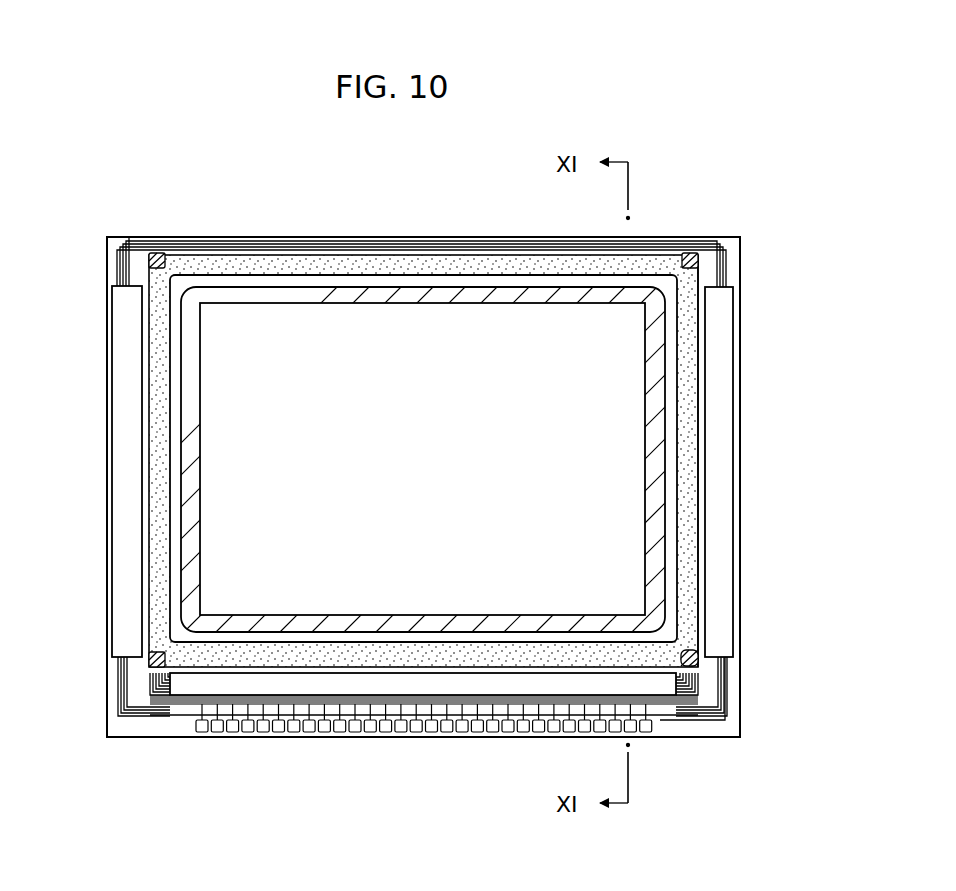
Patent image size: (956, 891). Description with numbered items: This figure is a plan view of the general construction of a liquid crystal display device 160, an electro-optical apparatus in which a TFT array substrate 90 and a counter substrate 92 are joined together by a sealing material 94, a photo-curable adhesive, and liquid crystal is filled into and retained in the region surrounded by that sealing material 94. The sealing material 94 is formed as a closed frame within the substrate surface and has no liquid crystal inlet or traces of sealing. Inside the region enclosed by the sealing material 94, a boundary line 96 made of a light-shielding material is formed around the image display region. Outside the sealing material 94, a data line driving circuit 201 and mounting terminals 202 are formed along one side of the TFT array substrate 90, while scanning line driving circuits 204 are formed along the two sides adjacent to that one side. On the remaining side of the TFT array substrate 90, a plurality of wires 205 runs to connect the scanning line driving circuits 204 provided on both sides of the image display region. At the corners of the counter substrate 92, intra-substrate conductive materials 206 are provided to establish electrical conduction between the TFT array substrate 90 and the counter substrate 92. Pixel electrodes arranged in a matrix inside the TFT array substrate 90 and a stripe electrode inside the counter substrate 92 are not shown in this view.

The liquid crystal display device 160 is at (675, 152).
The TFT array substrate 90 is at (323, 234).
The counter substrate 92 is at (390, 252).
The sealing material 94 is at (699, 418).
The boundary line 96 is at (653, 582).
The data line driving circuit 201 is at (655, 690).
The mounting terminals 202 is at (233, 733).
The scanning line driving circuits 204 is at (128, 503).
The wires 205 is at (243, 240).
The intra-substrate conductive materials 206 is at (157, 253).